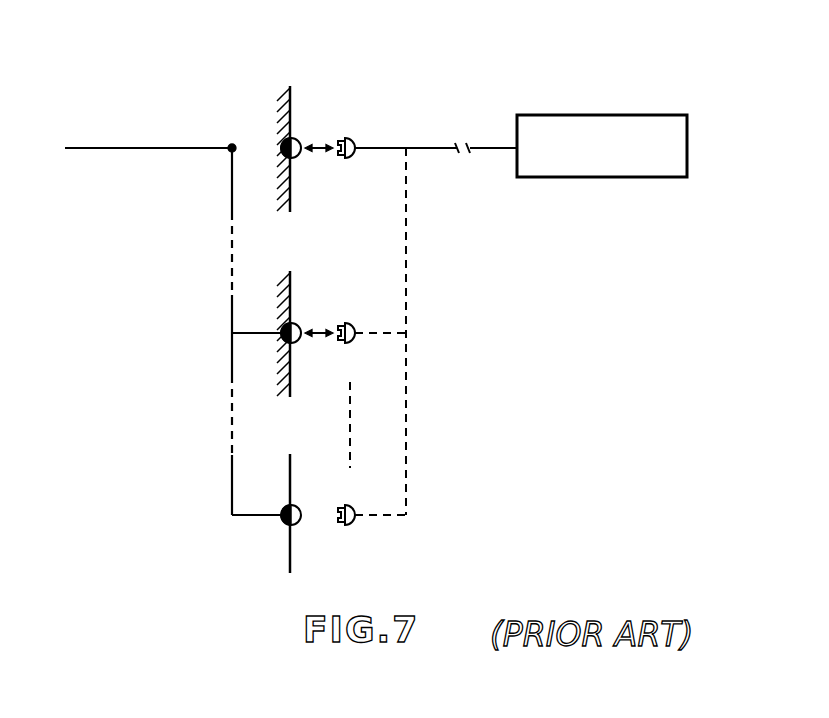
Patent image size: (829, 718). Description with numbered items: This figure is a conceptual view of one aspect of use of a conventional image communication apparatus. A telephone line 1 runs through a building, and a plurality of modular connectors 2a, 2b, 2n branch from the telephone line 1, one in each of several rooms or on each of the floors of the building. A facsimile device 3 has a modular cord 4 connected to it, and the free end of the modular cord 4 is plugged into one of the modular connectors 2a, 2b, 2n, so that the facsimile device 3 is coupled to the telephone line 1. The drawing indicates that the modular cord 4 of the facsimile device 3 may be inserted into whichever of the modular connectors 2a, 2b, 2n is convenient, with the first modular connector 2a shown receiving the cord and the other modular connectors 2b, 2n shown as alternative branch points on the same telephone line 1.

The telephone line 1 is at (82, 148).
The modular connector 2a is at (300, 140).
The modular connector 2b is at (311, 327).
The modular connector 2n is at (307, 507).
The facsimile device 3 is at (648, 115).
The modular cord 4 is at (378, 148).